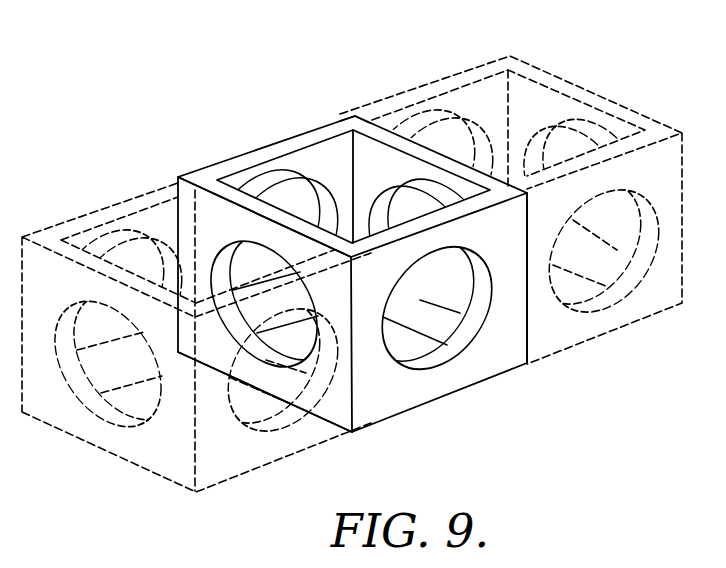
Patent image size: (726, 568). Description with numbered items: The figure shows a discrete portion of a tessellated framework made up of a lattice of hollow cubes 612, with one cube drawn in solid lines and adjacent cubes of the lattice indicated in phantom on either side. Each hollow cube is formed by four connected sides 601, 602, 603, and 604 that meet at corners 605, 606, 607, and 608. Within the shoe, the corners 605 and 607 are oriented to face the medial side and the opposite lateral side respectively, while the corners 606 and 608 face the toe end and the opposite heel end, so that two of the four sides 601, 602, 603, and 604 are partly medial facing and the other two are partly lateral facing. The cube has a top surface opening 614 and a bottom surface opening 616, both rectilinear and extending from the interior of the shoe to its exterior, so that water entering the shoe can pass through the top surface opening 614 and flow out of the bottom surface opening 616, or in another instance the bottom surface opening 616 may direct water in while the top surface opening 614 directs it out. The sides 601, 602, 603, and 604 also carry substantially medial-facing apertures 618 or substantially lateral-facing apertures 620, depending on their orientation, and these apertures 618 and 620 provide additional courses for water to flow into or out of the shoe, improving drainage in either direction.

The side 601 is at (377, 408).
The side 602 is at (220, 210).
The side 603 is at (292, 163).
The side 604 is at (390, 162).
The corner 605 is at (348, 412).
The corner 606 is at (176, 210).
The corner 607 is at (350, 131).
The corner 608 is at (530, 343).
The lattice of hollow cubes 612 is at (357, 108).
The top surface opening 614 is at (322, 156).
The bottom surface opening 616 is at (397, 352).
The medial-facing aperture 618 is at (280, 206).
The lateral-facing aperture 620 is at (420, 323).